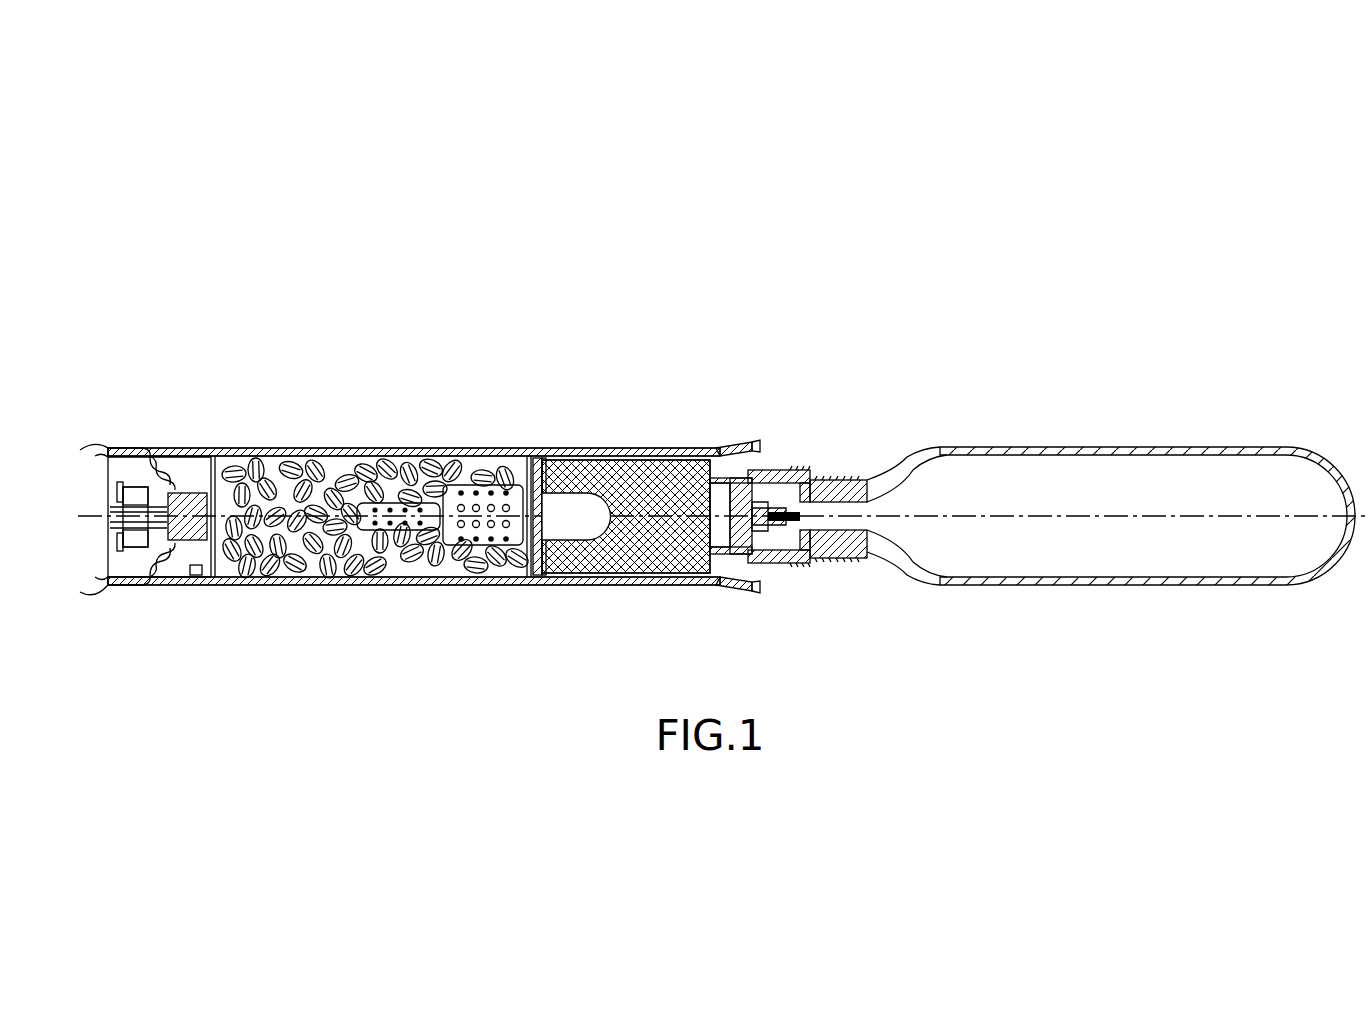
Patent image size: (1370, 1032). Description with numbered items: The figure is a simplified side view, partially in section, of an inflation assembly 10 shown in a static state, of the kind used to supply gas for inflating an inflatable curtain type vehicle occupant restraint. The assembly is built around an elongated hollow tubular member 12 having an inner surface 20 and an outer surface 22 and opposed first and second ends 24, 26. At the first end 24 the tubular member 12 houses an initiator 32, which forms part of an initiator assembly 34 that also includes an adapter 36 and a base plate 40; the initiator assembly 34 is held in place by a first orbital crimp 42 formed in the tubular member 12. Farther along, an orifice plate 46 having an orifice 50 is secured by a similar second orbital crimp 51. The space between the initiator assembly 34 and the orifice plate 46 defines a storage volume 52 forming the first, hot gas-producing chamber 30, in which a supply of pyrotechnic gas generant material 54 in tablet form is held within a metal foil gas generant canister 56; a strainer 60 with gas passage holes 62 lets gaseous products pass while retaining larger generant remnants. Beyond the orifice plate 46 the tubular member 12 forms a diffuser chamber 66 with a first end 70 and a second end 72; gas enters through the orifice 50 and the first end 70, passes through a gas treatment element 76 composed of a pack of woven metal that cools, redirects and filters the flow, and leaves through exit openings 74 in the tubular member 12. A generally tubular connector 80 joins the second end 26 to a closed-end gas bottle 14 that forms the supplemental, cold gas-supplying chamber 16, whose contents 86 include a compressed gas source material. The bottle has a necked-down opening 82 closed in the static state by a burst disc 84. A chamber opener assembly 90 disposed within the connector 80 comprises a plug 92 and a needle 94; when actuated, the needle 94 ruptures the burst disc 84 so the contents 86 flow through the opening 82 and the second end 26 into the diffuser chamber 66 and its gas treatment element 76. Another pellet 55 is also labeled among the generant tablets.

The inflation assembly 10 is at (1110, 288).
The tubular member 12 is at (365, 440).
The gas bottle 14 is at (1147, 499).
The supplemental gas supply chamber 16 is at (1152, 580).
The inner surface 20 is at (108, 578).
The outer surface 22 is at (373, 580).
The first end 24 is at (128, 430).
The second end 26 is at (747, 440).
The first chamber 30 is at (410, 590).
The initiator 32 is at (220, 450).
The initiator assembly 34 is at (176, 583).
The adapter 36 is at (90, 445).
The base plate 40 is at (172, 450).
The first orbital crimp 42 is at (122, 584).
The orifice plate 46 is at (537, 458).
The orifice 50 is at (537, 588).
The second orbital crimp 51 is at (552, 458).
The storage volume 52 is at (398, 447).
The pyrotechnic gas generant material 54 is at (320, 588).
The pellet 55 is at (338, 588).
The gas generant canister 56 is at (525, 590).
The strainer 60 is at (476, 452).
The gas passage holes 62 is at (478, 470).
The diffuser chamber 66 is at (700, 588).
The first end 70 is at (626, 516).
The second end 72 is at (703, 442).
The exit openings 74 is at (625, 588).
The gas treatment element 76 is at (657, 462).
The connector 80 is at (805, 462).
The necked-down opening 82 is at (845, 525).
The burst disc 84 is at (800, 565).
The contents 86 is at (1210, 576).
The chamber opener assembly 90 is at (760, 563).
The plug 92 is at (732, 462).
The needle 94 is at (773, 468).